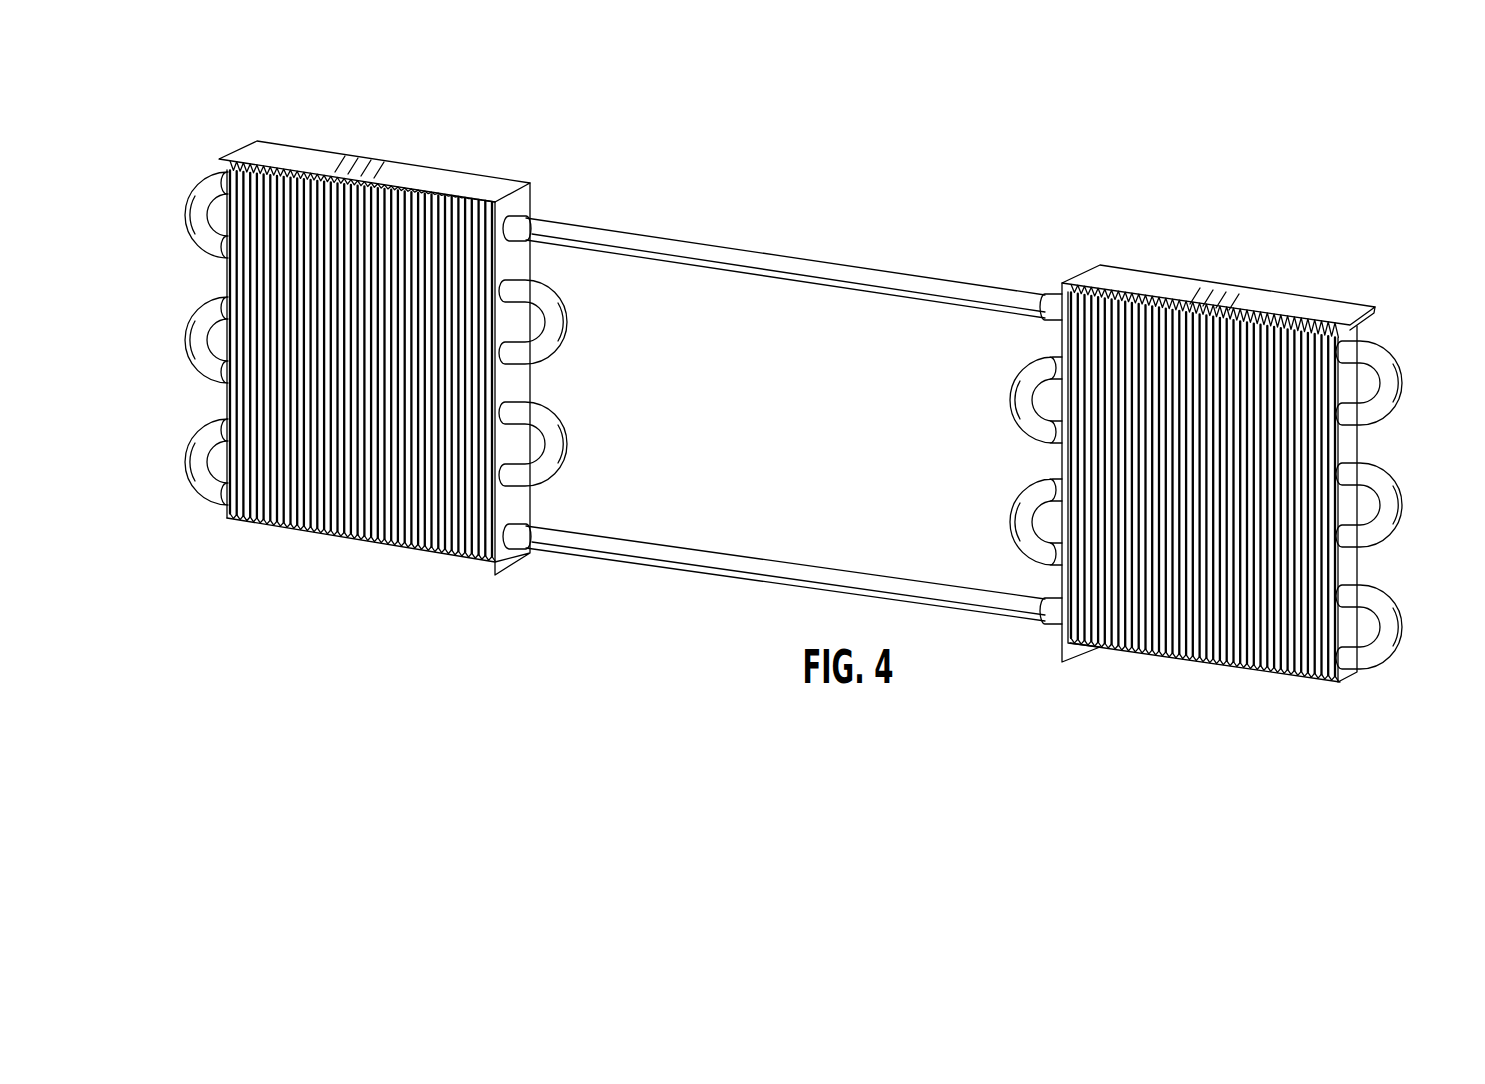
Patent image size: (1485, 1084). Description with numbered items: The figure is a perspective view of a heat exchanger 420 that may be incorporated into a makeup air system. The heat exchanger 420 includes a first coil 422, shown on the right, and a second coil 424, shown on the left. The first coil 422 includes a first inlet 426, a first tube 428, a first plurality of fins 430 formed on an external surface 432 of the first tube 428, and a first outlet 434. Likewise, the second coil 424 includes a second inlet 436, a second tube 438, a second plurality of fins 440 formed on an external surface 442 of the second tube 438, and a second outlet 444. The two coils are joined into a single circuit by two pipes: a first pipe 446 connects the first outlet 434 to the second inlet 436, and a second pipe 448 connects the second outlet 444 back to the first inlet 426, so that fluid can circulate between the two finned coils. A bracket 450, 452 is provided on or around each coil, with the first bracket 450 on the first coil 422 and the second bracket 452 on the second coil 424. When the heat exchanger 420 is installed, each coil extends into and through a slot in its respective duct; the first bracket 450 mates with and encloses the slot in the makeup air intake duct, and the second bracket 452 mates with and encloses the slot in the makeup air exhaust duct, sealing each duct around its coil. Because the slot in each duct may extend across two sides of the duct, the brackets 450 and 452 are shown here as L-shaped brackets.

The heat exchanger 420 is at (986, 149).
The first coil 422 is at (1198, 729).
The second coil 424 is at (272, 607).
The first inlet 426 is at (1036, 626).
The first tube 428 is at (1010, 520).
The first plurality of fins 430 is at (1341, 681).
The external surface of the first tube 432 is at (1411, 349).
The first outlet 434 is at (1050, 296).
The second inlet 436 is at (537, 212).
The second tube 438 is at (187, 333).
The second plurality of fins 440 is at (283, 522).
The external surface of the second tube 442 is at (580, 320).
The second outlet 444 is at (532, 547).
The first pipe 446 is at (755, 258).
The second pipe 448 is at (752, 575).
The first bracket 450 is at (1155, 282).
The second bracket 452 is at (310, 160).